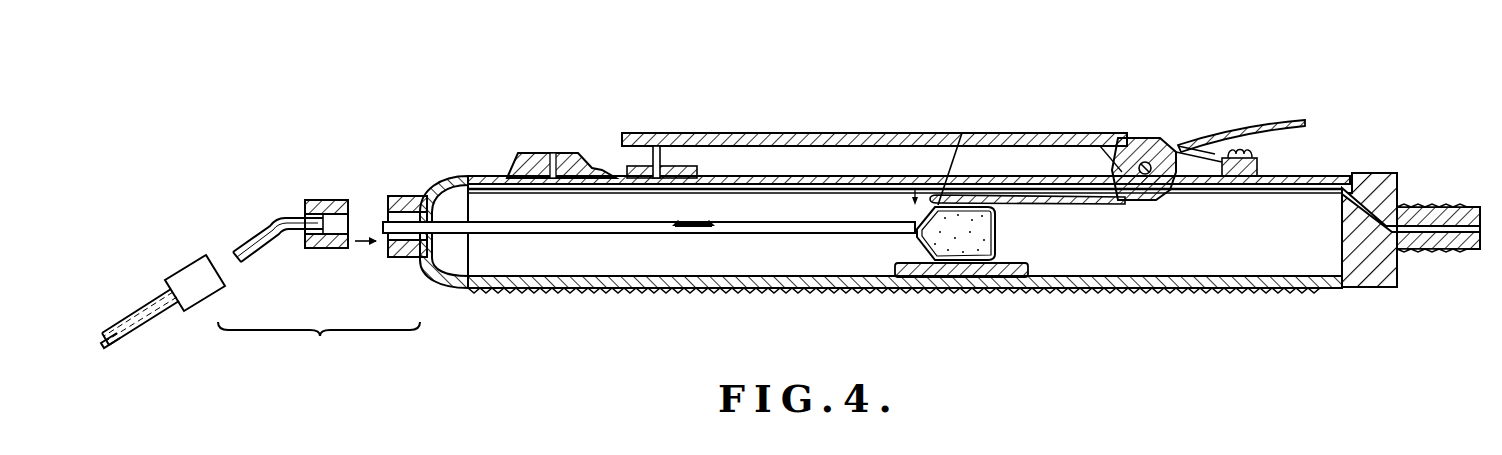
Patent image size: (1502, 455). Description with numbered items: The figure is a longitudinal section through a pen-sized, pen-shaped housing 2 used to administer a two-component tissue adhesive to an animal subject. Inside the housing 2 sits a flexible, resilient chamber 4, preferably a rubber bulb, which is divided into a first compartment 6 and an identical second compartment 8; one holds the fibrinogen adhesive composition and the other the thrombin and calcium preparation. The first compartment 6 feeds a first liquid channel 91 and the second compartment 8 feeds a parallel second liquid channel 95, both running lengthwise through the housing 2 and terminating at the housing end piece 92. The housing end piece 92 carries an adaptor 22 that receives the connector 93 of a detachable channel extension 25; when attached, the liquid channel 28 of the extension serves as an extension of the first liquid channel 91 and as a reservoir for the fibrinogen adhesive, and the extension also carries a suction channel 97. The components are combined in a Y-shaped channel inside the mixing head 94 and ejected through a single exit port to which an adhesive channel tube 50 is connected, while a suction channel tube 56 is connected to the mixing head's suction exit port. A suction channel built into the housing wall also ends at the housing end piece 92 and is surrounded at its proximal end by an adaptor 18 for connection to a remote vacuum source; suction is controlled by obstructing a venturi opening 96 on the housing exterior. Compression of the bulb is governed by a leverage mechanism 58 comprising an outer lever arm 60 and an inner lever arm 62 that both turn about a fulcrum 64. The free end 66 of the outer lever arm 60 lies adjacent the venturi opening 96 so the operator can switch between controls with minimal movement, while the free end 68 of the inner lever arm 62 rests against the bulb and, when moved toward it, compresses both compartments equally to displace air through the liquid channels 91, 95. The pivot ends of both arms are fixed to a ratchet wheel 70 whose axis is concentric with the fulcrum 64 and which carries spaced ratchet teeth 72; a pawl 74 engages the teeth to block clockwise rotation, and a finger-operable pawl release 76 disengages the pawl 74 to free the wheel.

The housing 2 is at (702, 300).
The chamber 4 is at (997, 236).
The first compartment 6 is at (961, 270).
The second compartment 8 is at (958, 250).
The adaptor 18 is at (1416, 206).
The adaptor 22 is at (400, 196).
The channel extension 25 is at (247, 238).
The liquid channel 28 is at (1336, 454).
The adhesive channel tube 50 is at (138, 328).
The suction channel tube 56 is at (147, 306).
The leverage mechanism 58 is at (1034, 128).
The outer lever arm 60 is at (796, 137).
The inner lever arm 62 is at (1076, 205).
The fulcrum 64 is at (1148, 176).
The free end of outer lever arm 66 is at (655, 133).
The free end of inner lever arm 68 is at (958, 155).
The ratchet wheel 70 is at (1150, 137).
The ratchet teeth 72 is at (1174, 148).
The pawl 74 is at (1191, 149).
The pawl release 76 is at (1266, 127).
The first liquid channel 91 is at (692, 224).
The housing end piece 92 is at (441, 168).
The connector 93 is at (332, 200).
The mixing head 94 is at (183, 262).
The second liquid channel 95 is at (780, 235).
The venturi opening 96 is at (553, 155).
The suction channel 97 is at (1322, 454).